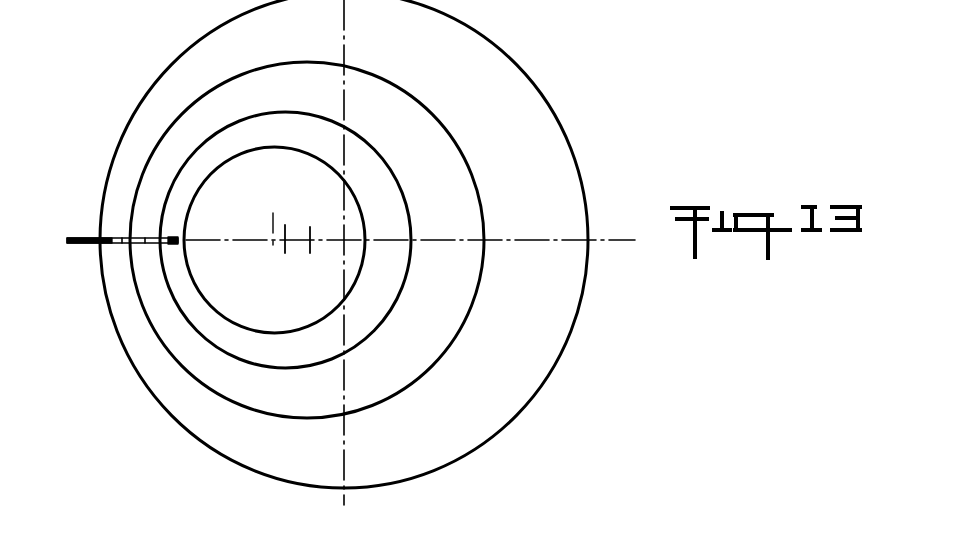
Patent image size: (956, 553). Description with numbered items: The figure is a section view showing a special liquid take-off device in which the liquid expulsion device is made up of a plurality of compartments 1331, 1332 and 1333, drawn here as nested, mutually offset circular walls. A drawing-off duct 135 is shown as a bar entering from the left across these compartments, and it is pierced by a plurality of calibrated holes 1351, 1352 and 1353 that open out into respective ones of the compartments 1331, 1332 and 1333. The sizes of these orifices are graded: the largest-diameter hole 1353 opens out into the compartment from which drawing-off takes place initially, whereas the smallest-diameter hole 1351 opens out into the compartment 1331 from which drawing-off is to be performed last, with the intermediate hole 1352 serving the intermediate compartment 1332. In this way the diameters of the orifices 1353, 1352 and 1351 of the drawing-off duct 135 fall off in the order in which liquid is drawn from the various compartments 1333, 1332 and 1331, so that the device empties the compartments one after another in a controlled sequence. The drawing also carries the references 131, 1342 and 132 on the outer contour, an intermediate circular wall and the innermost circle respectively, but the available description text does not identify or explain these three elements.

The outer housing ring 131 is at (572, 104).
The compartment 1331 is at (117, 228).
The compartment 1332 is at (146, 226).
The compartment 1333 is at (177, 226).
The eccentric ring 1342 is at (392, 168).
The inner bore 132 is at (329, 164).
The drawing-off duct 135 is at (112, 226).
The calibrated hole 1351 is at (116, 246).
The calibrated hole 1352 is at (147, 246).
The calibrated hole 1353 is at (182, 250).